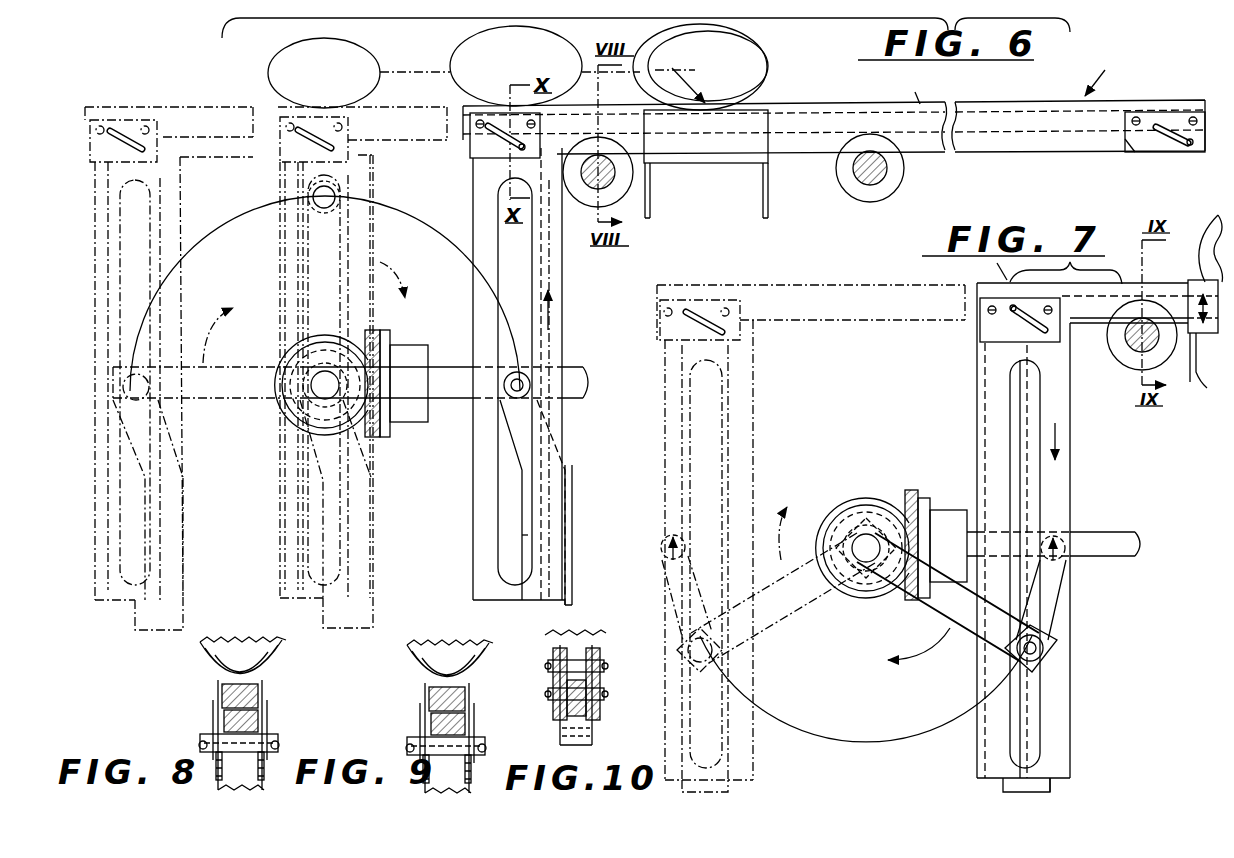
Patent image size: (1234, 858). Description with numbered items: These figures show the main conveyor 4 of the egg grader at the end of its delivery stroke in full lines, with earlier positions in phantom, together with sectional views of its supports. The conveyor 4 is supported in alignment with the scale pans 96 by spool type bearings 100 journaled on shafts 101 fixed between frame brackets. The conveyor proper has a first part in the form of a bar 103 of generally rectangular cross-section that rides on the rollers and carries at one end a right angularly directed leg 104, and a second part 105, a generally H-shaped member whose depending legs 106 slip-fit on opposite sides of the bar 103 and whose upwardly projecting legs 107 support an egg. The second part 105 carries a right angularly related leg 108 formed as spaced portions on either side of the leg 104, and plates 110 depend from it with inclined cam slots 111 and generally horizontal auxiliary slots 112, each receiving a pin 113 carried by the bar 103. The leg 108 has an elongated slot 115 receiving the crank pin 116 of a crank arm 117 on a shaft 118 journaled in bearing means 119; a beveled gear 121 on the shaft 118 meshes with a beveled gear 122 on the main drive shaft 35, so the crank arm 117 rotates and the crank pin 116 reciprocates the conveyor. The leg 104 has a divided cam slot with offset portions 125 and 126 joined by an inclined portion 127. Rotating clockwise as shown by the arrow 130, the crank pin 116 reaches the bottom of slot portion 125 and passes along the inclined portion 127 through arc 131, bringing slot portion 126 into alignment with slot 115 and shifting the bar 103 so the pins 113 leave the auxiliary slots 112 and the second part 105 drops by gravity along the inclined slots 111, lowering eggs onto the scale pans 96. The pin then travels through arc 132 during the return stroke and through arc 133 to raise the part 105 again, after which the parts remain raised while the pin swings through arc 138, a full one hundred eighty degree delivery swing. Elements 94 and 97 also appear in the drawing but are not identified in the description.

In FIG. 6, the main conveyor 4 is at (1101, 76).
In FIG. 7, the main drive shaft 35 is at (1125, 530).
In FIG. 6, the bracket 94 is at (768, 200).
In FIG. 7, the bracket 94 is at (1207, 388).
In FIG. 8, the bracket 94 is at (250, 788).
In FIG. 9, the bracket 94 is at (460, 790).
In FIG. 6, the scale pans 96 is at (768, 160).
In FIG. 7, the scale pans 96 is at (1198, 278).
In FIG. 8, the roller 97 is at (268, 688).
In FIG. 9, the roller 97 is at (472, 690).
In FIG. 6, the spool type bearings 100 is at (892, 180).
In FIG. 7, the spool type bearings 100 is at (1128, 349).
In FIG. 8, the spool type bearings 100 is at (213, 722).
In FIG. 9, the spool type bearings 100 is at (474, 724).
In FIG. 6, the shafts 101 is at (866, 178).
In FIG. 8, the shafts 101 is at (203, 744).
In FIG. 9, the shafts 101 is at (481, 747).
In FIG. 6, the bar 103 is at (1000, 148).
In FIG. 7, the bar 103 is at (1092, 326).
In FIG. 8, the bar 103 is at (260, 720).
In FIG. 9, the bar 103 is at (438, 723).
In FIG. 10, the bar 103 is at (580, 677).
In FIG. 6, the right angularly directed leg 104 is at (568, 515).
In FIG. 7, the right angularly directed leg 104 is at (1050, 792).
In FIG. 10, the right angularly directed leg 104 is at (584, 712).
In FIG. 6, the second part 105 is at (893, 90).
In FIG. 7, the second part 105 is at (979, 265).
In FIG. 8, the depending legs 106 is at (258, 698).
In FIG. 9, the upwardly projecting legs 107 is at (430, 700).
In FIG. 6, the right angularly related leg 108 is at (558, 268).
In FIG. 7, the right angularly related leg 108 is at (1062, 498).
In FIG. 6, the plates 110 is at (92, 145).
In FIG. 7, the plates 110 is at (992, 330).
In FIG. 6, the inclined cam slots 111 is at (497, 140).
In FIG. 7, the inclined cam slots 111 is at (1020, 323).
In FIG. 6, the auxiliary slots 112 is at (520, 148).
In FIG. 6, the pin 113 is at (1203, 145).
In FIG. 7, the pin 113 is at (1010, 309).
In FIG. 6, the elongated slot 115 is at (530, 310).
In FIG. 7, the elongated slot 115 is at (1036, 477).
In FIG. 6, the crank pin 116 is at (512, 393).
In FIG. 7, the crank pin 116 is at (1045, 650).
In FIG. 6, the crank arm 117 is at (453, 362).
In FIG. 7, the crank arm 117 is at (935, 608).
In FIG. 6, the shaft 118 is at (320, 390).
In FIG. 7, the shaft 118 is at (865, 552).
In FIG. 6, the bearing means 119 is at (283, 356).
In FIG. 7, the beveled gear 121 is at (853, 494).
In FIG. 7, the beveled gear 122 is at (935, 478).
In FIG. 7, the offset portion 125 is at (1015, 420).
In FIG. 6, the offset portion 126 is at (528, 535).
In FIG. 6, the inclined portion 127 is at (520, 455).
In FIG. 6, the arrow 130 is at (432, 420).
In FIG. 7, the arc 131 is at (1062, 606).
In FIG. 7, the arc 132 is at (866, 731).
In FIG. 7, the arc 133 is at (683, 612).
In FIG. 6, the arc 138 is at (223, 224).